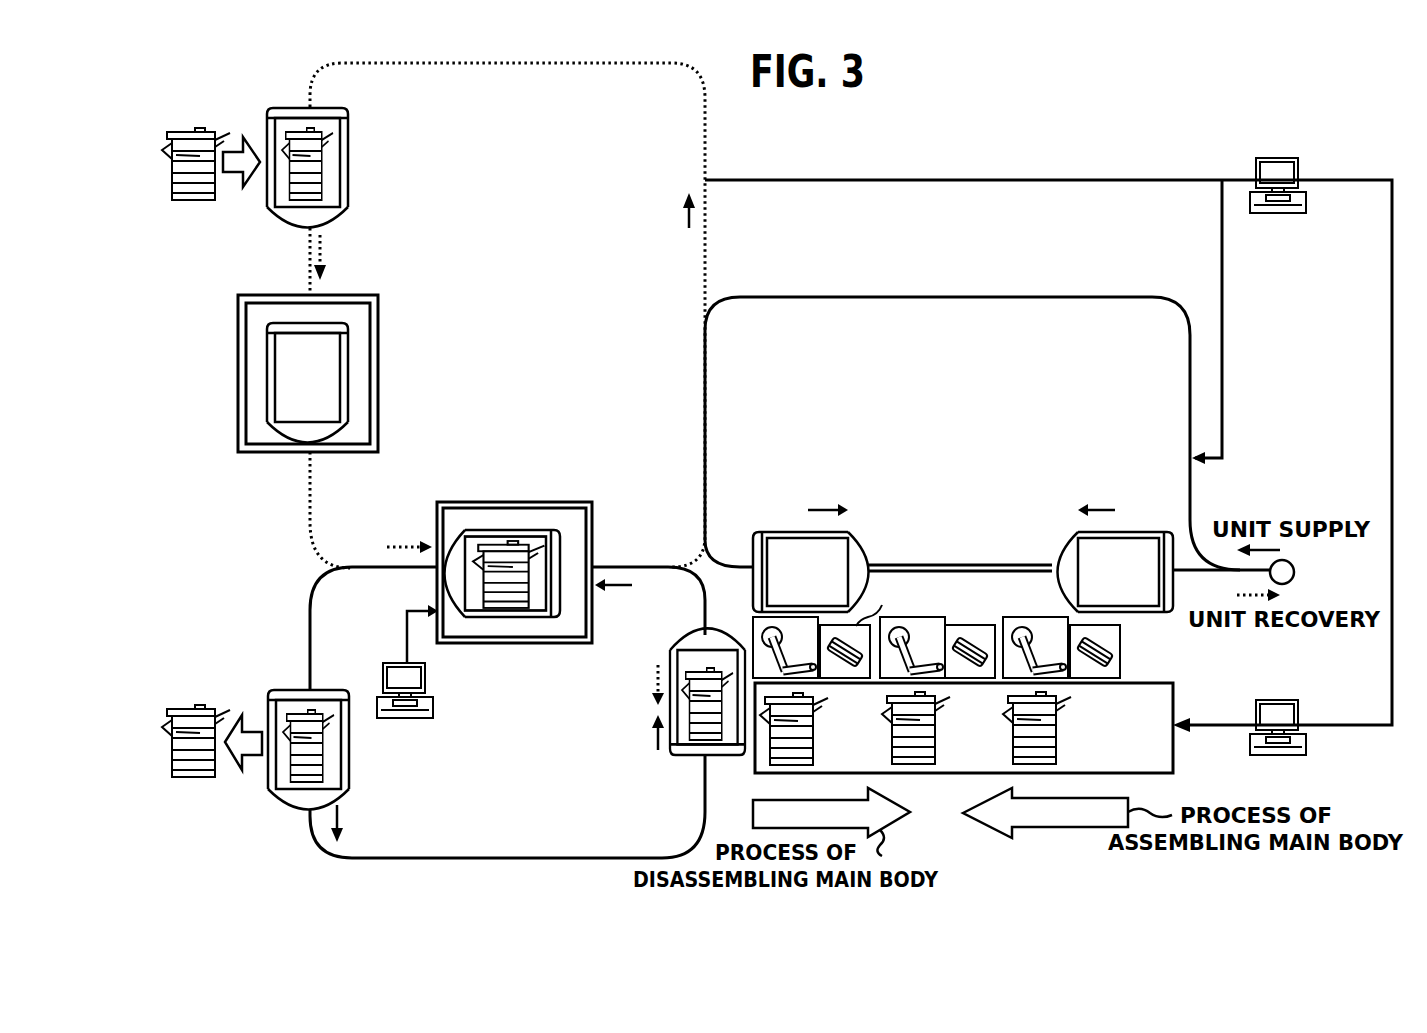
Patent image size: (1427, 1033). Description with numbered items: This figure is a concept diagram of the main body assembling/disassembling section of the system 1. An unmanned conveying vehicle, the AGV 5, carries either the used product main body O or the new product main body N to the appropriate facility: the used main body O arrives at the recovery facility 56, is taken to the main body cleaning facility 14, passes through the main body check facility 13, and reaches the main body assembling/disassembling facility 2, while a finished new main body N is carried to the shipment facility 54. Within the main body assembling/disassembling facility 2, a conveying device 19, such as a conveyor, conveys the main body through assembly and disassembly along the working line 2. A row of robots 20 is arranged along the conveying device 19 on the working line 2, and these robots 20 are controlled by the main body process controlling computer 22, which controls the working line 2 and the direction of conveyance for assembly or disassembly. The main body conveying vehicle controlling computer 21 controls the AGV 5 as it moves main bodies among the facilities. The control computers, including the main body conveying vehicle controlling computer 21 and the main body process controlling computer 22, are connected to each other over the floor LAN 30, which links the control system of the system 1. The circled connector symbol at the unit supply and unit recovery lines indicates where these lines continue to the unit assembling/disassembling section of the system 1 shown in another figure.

The system 1 is at (1262, 136).
The main body assembling/disassembling facility 2 is at (1170, 665).
The unmanned conveying vehicle (AGV) 5 is at (350, 158).
The main body check facility 13 is at (571, 501).
The main body cleaning facility 14 is at (378, 398).
The conveying device 19 is at (1173, 750).
The robots 20 is at (762, 635).
The main body conveying vehicle controlling computer 21 is at (1272, 214).
The main body process controlling computer 22 is at (1300, 705).
The floor LAN 30 is at (1392, 430).
The shipment facility 54 is at (206, 719).
The recovery facility 56 is at (202, 150).
The used product main body O is at (190, 128).
The new product main body N is at (191, 705).